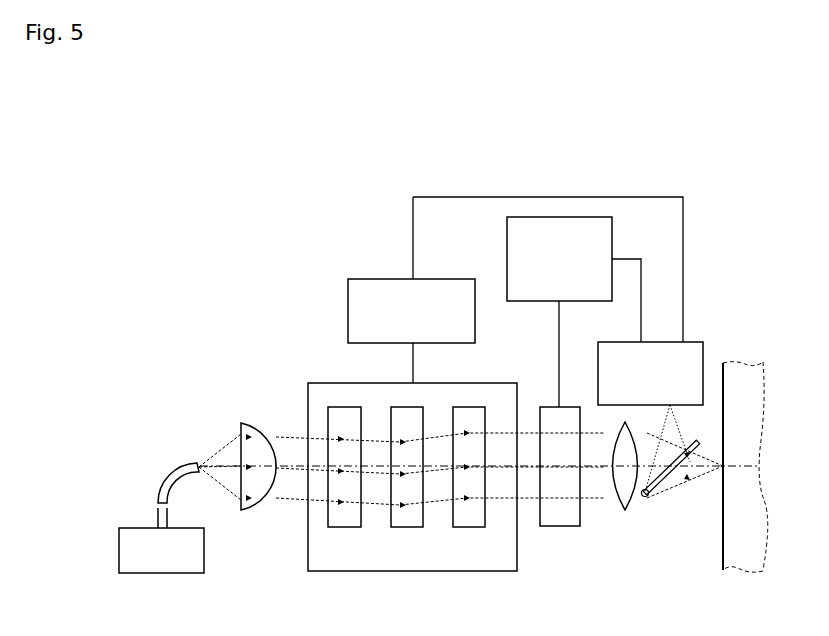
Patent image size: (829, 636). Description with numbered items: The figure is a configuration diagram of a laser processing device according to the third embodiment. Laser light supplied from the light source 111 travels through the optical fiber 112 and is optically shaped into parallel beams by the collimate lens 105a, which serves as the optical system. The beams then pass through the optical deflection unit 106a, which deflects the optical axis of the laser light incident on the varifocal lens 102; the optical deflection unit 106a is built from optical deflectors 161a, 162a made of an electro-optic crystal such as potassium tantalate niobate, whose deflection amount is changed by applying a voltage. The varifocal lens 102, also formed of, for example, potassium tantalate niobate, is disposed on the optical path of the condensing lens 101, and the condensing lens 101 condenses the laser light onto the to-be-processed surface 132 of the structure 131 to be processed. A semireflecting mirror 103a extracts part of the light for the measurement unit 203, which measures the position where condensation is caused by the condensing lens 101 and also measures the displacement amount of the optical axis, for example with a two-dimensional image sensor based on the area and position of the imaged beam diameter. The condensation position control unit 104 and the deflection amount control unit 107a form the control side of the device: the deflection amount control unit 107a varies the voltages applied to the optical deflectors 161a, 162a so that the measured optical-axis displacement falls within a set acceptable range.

The light source 111 is at (136, 527).
The optical fiber 112 is at (180, 476).
The collimate lens 105a is at (245, 511).
The optical deflection unit 106a is at (475, 383).
The optical deflector 161a is at (344, 529).
The optical deflector 162a is at (407, 529).
The varifocal lens 102 is at (560, 527).
The condensing lens 101 is at (625, 511).
The semireflecting mirror 103a is at (648, 497).
The deflection amount control unit 107a is at (348, 311).
The condensation position control unit 104 is at (507, 260).
The measurement unit 203 is at (704, 349).
The structure to be processed 131 is at (745, 571).
The to-be-processed surface 132 is at (722, 549).